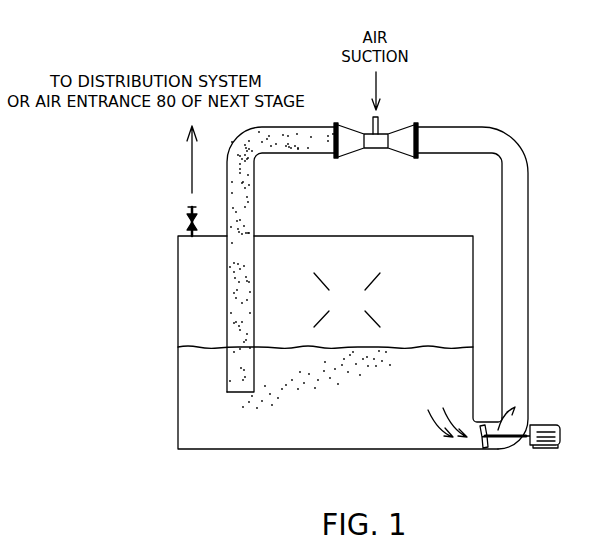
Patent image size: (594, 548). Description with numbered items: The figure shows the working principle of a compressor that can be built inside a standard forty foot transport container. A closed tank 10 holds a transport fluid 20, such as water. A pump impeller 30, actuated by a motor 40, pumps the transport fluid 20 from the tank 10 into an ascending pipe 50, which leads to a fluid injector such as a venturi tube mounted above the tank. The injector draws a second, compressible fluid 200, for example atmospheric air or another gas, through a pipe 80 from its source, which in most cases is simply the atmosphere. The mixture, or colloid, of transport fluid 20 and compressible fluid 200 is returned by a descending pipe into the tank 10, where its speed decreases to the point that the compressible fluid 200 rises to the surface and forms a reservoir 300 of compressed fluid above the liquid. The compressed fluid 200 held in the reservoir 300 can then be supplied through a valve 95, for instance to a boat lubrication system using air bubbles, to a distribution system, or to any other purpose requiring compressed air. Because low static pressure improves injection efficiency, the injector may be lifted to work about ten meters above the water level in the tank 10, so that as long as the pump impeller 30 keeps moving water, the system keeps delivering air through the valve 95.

The closed tank 10 is at (228, 450).
The transport fluid 20 is at (373, 360).
The pump impeller 30 is at (482, 441).
The motor 40 is at (548, 425).
The pipe 50 is at (527, 273).
The pipe 80 is at (383, 125).
The valve 95 is at (187, 222).
The compressible fluid 200 is at (242, 202).
The reservoir 300 is at (347, 300).